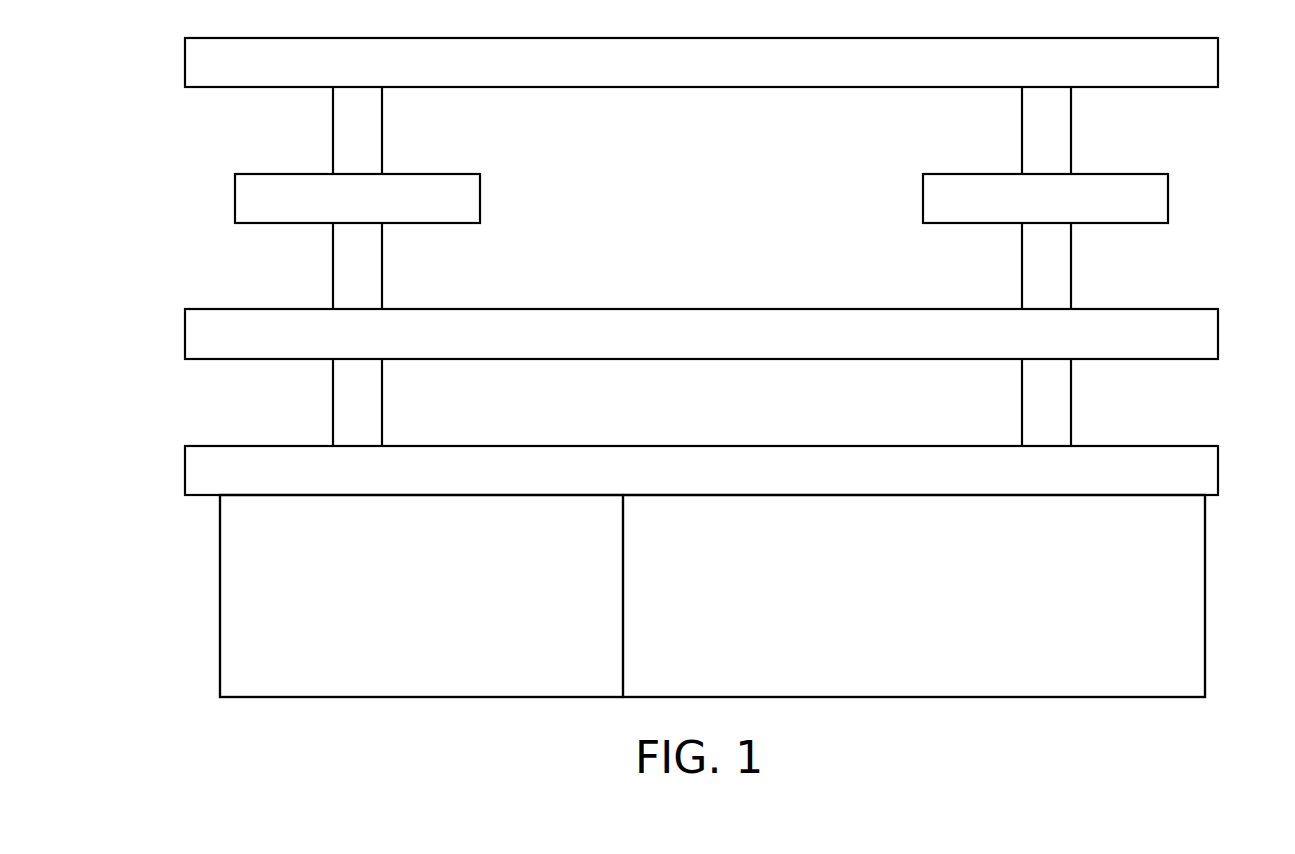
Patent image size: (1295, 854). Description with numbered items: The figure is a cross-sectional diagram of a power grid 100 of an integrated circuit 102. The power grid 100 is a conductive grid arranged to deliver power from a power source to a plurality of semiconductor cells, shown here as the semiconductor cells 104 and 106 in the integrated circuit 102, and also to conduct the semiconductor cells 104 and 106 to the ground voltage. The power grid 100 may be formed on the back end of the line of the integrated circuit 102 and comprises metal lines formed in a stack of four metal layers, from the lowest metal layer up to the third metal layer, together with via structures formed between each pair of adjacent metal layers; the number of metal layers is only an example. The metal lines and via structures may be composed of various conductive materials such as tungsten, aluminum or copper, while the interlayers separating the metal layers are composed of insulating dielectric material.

The power grid 100 is at (166, 38).
The integrated circuit 102 is at (166, 497).
The semiconductor cell 104 is at (443, 613).
The semiconductor cell 106 is at (936, 612).